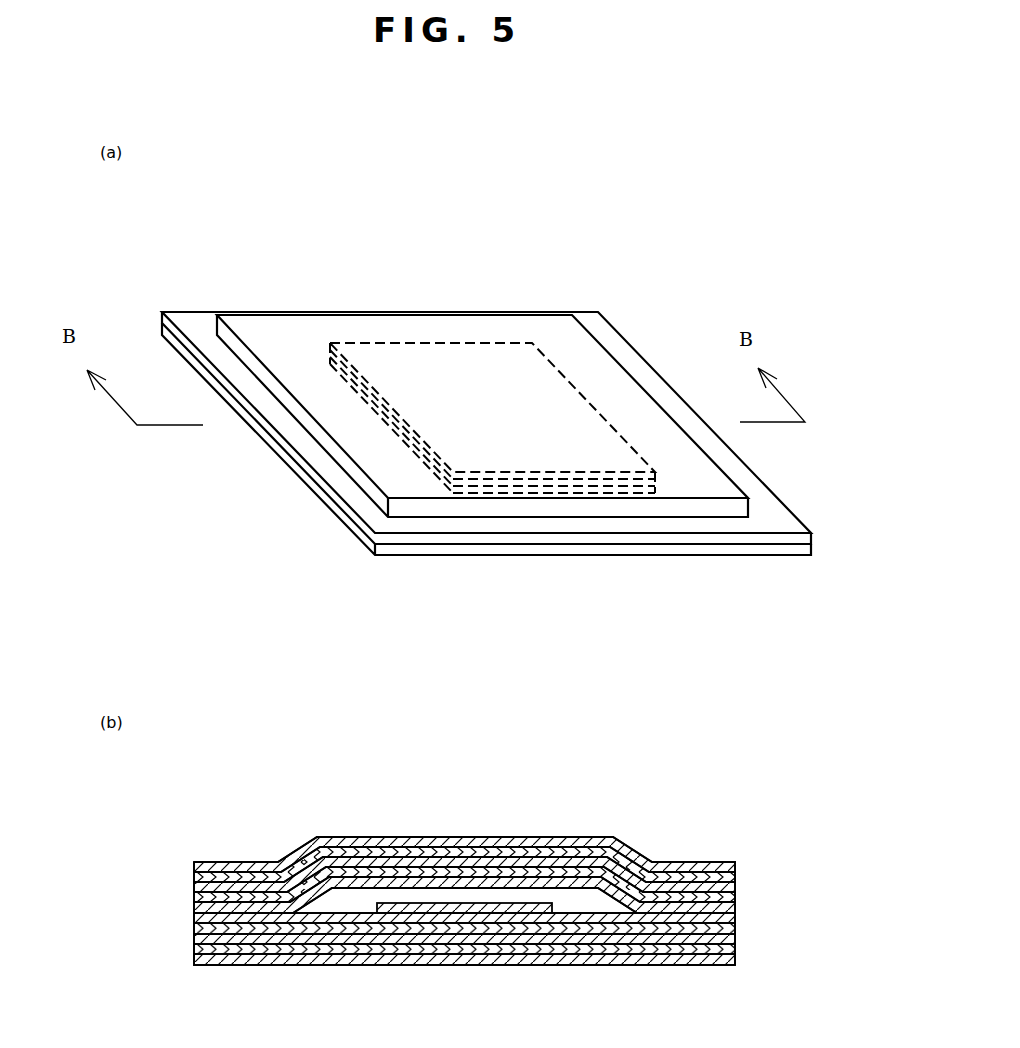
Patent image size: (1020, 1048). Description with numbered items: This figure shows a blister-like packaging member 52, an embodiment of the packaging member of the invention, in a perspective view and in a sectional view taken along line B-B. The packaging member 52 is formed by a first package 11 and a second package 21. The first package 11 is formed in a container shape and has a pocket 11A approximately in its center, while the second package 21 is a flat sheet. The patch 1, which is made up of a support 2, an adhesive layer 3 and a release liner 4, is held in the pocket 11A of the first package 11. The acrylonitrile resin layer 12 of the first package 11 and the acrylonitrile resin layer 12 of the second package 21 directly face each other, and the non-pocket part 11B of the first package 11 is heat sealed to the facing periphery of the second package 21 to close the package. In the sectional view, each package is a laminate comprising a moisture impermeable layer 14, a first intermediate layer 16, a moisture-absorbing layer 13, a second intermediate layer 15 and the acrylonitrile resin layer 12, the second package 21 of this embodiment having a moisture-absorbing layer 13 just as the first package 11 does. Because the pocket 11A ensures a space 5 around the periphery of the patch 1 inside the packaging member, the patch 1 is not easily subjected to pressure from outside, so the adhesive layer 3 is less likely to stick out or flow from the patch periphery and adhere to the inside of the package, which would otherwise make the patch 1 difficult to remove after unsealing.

The patch 1 is at (563, 377).
The support 2 is at (605, 493).
The adhesive layer 3 is at (535, 493).
The release liner 4 is at (465, 497).
The space 5 is at (348, 897).
The first package 11 is at (807, 538).
The pocket 11A is at (435, 840).
The non-pocket part 11B is at (700, 862).
The acrylonitrile resin layer 12 is at (735, 907).
The moisture-absorbing layer 13 is at (735, 887).
The moisture impermeable layer 14 is at (737, 867).
The second intermediate layer 15 is at (735, 897).
The first intermediate layer 16 is at (735, 878).
The second package 21 is at (718, 547).
The blister-like packaging member 52 is at (523, 268).